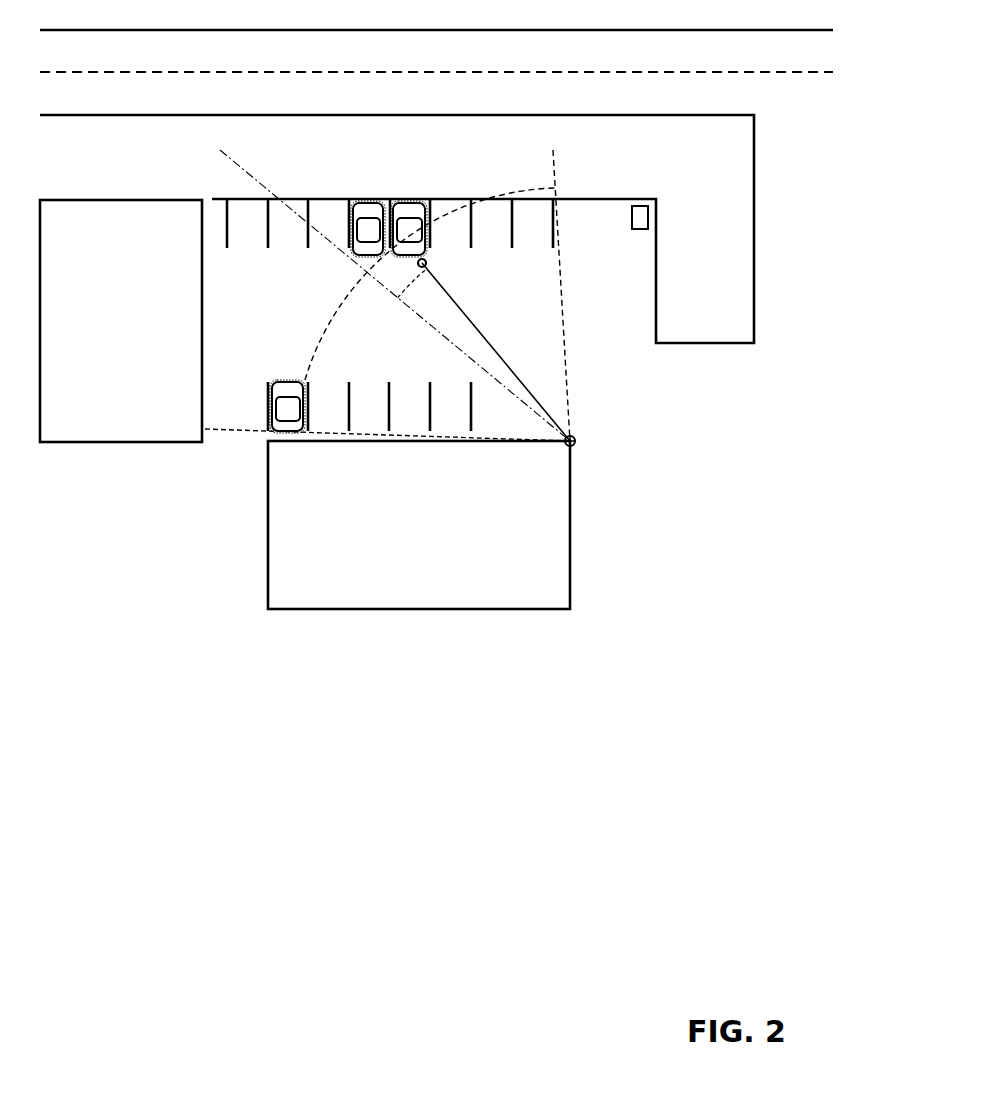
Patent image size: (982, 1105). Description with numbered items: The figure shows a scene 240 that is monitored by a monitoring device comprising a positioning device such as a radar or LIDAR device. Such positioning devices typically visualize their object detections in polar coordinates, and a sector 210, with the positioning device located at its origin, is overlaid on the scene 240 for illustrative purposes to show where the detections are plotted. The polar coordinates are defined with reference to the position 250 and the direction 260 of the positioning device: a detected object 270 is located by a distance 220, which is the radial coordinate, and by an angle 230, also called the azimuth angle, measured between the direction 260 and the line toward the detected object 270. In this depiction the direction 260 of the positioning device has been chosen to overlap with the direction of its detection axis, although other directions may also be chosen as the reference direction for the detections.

The sector 210 is at (542, 243).
The distance 220 is at (482, 330).
The angle 230 is at (438, 310).
The scene 240 is at (387, 361).
The position 250 is at (575, 437).
The direction 260 is at (260, 183).
The detected object 270 is at (426, 260).